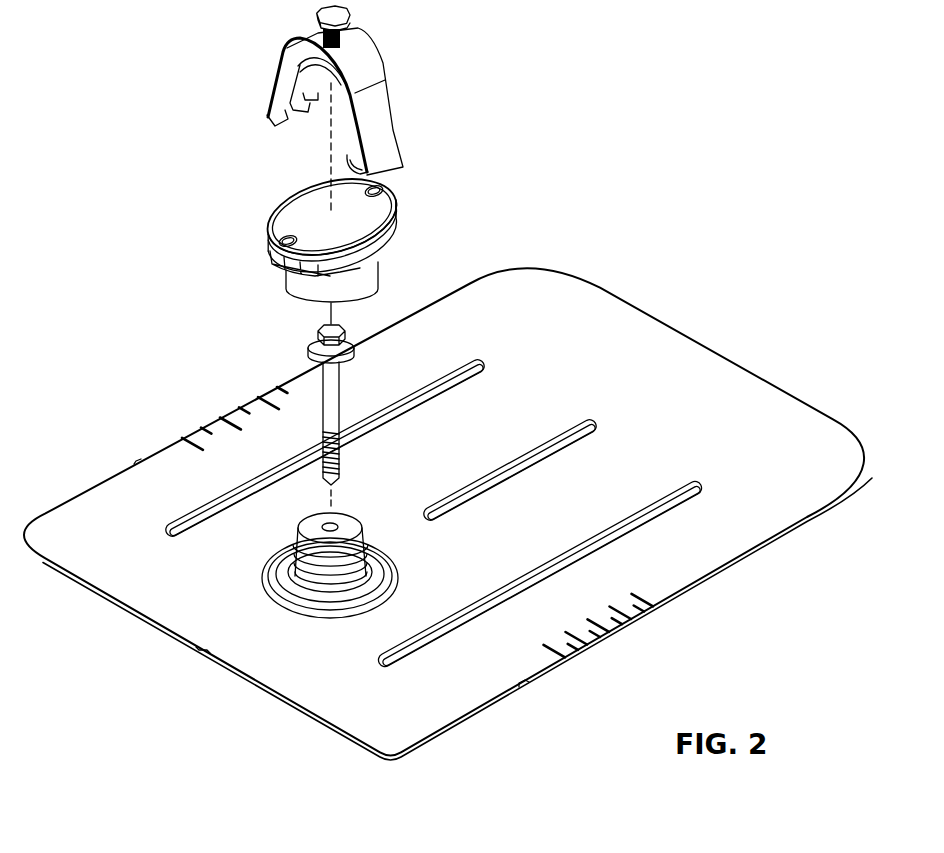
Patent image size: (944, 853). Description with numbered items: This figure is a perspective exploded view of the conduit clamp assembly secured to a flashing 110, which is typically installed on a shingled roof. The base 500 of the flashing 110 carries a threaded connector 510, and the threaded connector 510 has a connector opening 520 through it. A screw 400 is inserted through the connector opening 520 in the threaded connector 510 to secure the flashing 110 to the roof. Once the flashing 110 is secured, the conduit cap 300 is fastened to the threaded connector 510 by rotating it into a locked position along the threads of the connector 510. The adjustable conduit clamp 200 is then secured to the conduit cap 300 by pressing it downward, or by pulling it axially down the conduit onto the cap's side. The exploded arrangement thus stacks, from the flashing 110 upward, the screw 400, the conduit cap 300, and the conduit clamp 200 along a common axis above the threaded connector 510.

The flashing 110 is at (697, 360).
The adjustable conduit clamp 200 is at (393, 118).
The conduit cap 300 is at (395, 207).
The screw 400 is at (320, 407).
The base 500 is at (265, 534).
The threaded connector 510 is at (290, 550).
The connector opening 520 is at (330, 527).